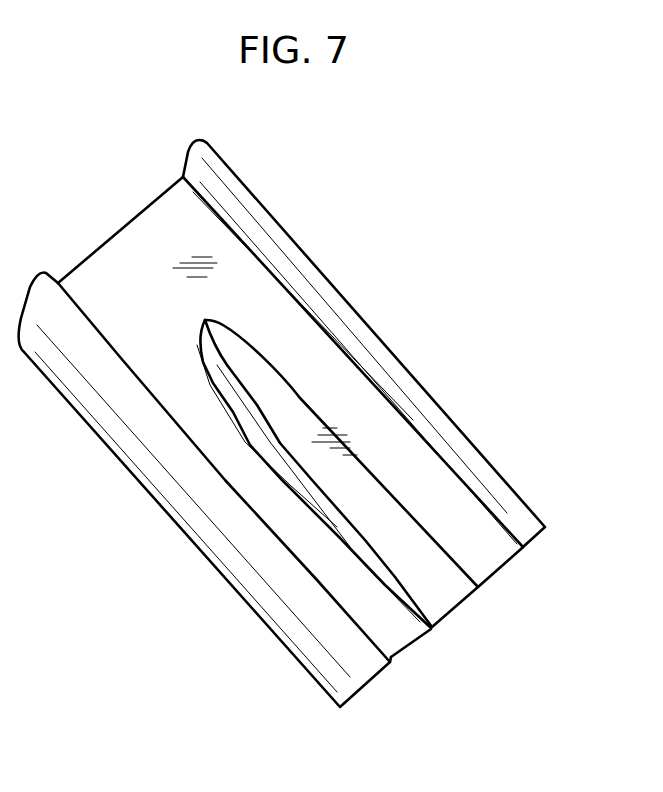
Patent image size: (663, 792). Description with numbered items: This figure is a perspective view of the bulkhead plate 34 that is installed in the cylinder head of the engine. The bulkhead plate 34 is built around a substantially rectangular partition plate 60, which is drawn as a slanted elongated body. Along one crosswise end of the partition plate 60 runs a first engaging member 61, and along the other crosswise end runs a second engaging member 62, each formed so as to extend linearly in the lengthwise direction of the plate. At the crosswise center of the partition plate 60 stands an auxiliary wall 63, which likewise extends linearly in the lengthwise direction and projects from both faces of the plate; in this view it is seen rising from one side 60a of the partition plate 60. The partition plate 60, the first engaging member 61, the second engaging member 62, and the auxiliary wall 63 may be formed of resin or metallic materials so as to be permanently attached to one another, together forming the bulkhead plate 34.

The bulkhead plate 34 is at (392, 276).
The partition plate 60 is at (110, 279).
The one side of the partition plate 60a is at (170, 372).
The first engaging member 61 is at (412, 380).
The second engaging member 62 is at (175, 490).
The auxiliary wall 63 is at (249, 362).